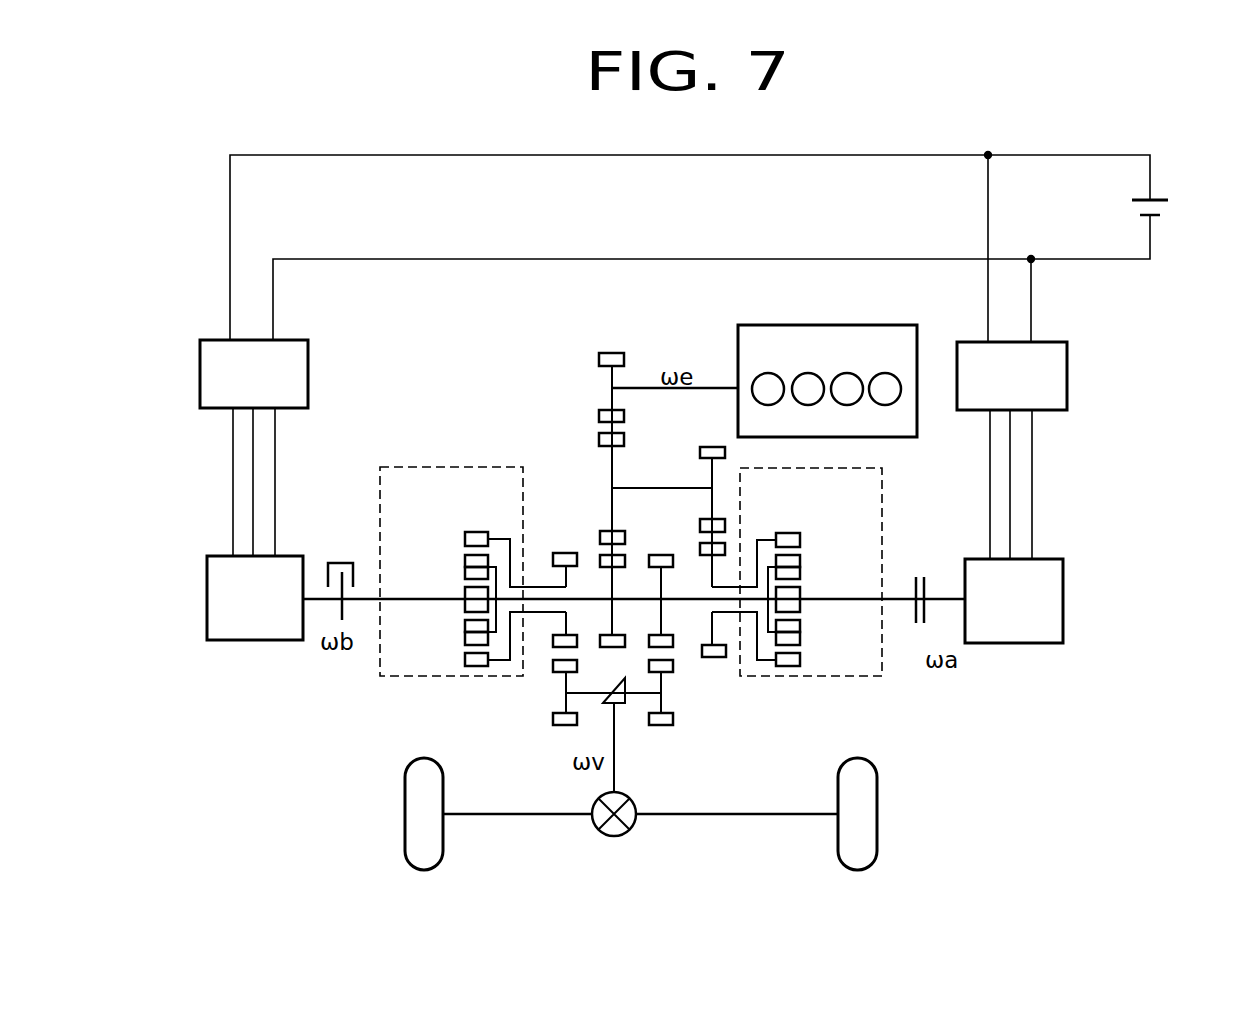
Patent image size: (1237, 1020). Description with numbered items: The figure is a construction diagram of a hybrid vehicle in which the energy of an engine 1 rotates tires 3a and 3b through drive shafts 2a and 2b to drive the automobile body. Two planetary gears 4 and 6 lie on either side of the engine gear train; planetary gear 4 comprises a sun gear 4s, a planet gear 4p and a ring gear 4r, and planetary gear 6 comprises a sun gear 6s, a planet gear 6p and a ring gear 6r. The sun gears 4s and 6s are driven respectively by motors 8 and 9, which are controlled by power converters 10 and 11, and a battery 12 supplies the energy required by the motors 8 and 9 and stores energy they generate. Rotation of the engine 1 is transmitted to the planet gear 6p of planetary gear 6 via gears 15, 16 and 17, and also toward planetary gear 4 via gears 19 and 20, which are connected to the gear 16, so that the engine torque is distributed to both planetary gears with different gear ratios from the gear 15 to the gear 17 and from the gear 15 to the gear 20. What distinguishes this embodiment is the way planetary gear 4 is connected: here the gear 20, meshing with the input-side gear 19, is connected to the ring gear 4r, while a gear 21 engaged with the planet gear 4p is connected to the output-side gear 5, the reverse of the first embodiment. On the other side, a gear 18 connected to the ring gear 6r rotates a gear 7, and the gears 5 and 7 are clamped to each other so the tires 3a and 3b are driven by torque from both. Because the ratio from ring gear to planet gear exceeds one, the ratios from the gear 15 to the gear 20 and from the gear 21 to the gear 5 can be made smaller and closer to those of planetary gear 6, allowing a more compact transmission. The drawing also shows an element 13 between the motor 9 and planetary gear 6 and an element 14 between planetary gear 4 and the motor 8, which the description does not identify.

The engine 1 is at (828, 325).
The drive shaft 2a is at (515, 814).
The drive shaft 2b is at (758, 814).
The tire 3a is at (425, 758).
The tire 3b is at (858, 758).
The planetary gear 4 is at (821, 572).
The ring gear 4r is at (801, 540).
The sun gear 4s is at (801, 592).
The planet gear 4p is at (801, 632).
The output-side gear 5 is at (656, 725).
The planetary gear 6 is at (473, 543).
The ring gear 6r is at (463, 540).
The sun gear 6s is at (463, 592).
The planet gear 6p is at (463, 630).
The output gear 7 is at (553, 668).
The motor 8 is at (1063, 596).
The motor 9 is at (243, 642).
The power converter 10 is at (1067, 363).
The power converter 11 is at (308, 363).
The battery 12 is at (1165, 198).
The clutch / brake for first motor 13 is at (343, 562).
The clutch for second motor 14 is at (917, 576).
The gear 15 is at (598, 358).
The gear 16 is at (598, 440).
The gear 17 is at (623, 560).
The gear 18 is at (568, 552).
The input-side gear 19 is at (700, 450).
The gear 20 is at (718, 657).
The gear 21 is at (673, 642).